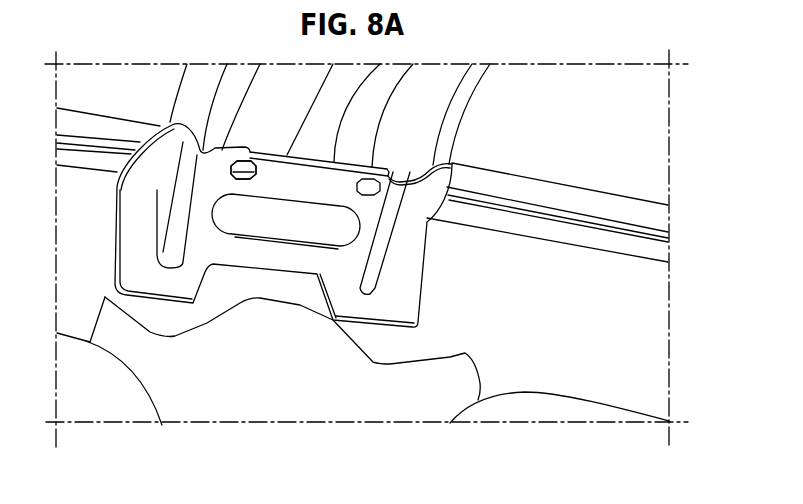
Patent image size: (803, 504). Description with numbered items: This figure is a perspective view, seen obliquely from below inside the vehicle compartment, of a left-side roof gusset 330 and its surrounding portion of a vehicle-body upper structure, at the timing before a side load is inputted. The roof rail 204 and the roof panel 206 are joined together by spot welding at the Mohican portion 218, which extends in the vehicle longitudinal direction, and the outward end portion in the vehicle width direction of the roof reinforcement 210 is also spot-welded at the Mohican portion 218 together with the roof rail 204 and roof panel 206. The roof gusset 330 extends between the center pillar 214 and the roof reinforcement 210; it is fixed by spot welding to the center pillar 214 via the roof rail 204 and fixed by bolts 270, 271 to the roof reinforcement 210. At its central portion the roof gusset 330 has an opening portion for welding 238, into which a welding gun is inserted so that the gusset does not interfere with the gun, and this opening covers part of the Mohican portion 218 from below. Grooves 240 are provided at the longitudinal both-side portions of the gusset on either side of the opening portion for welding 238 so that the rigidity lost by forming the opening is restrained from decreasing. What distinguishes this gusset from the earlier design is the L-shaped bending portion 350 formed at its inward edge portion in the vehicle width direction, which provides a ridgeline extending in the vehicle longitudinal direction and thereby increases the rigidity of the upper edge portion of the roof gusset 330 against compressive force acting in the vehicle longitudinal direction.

The roof rail 204 is at (592, 382).
The roof panel 206 is at (650, 141).
The roof reinforcement 210 is at (440, 97).
The center pillar 214 is at (160, 397).
The Mohican portion 218 is at (593, 238).
The opening portion for welding 238 is at (290, 234).
The groove 240 is at (200, 126).
The bolt 270 is at (370, 193).
The bolt 271 is at (238, 178).
The roof gusset 330 is at (433, 272).
The L-shaped bending portion 350 is at (378, 165).